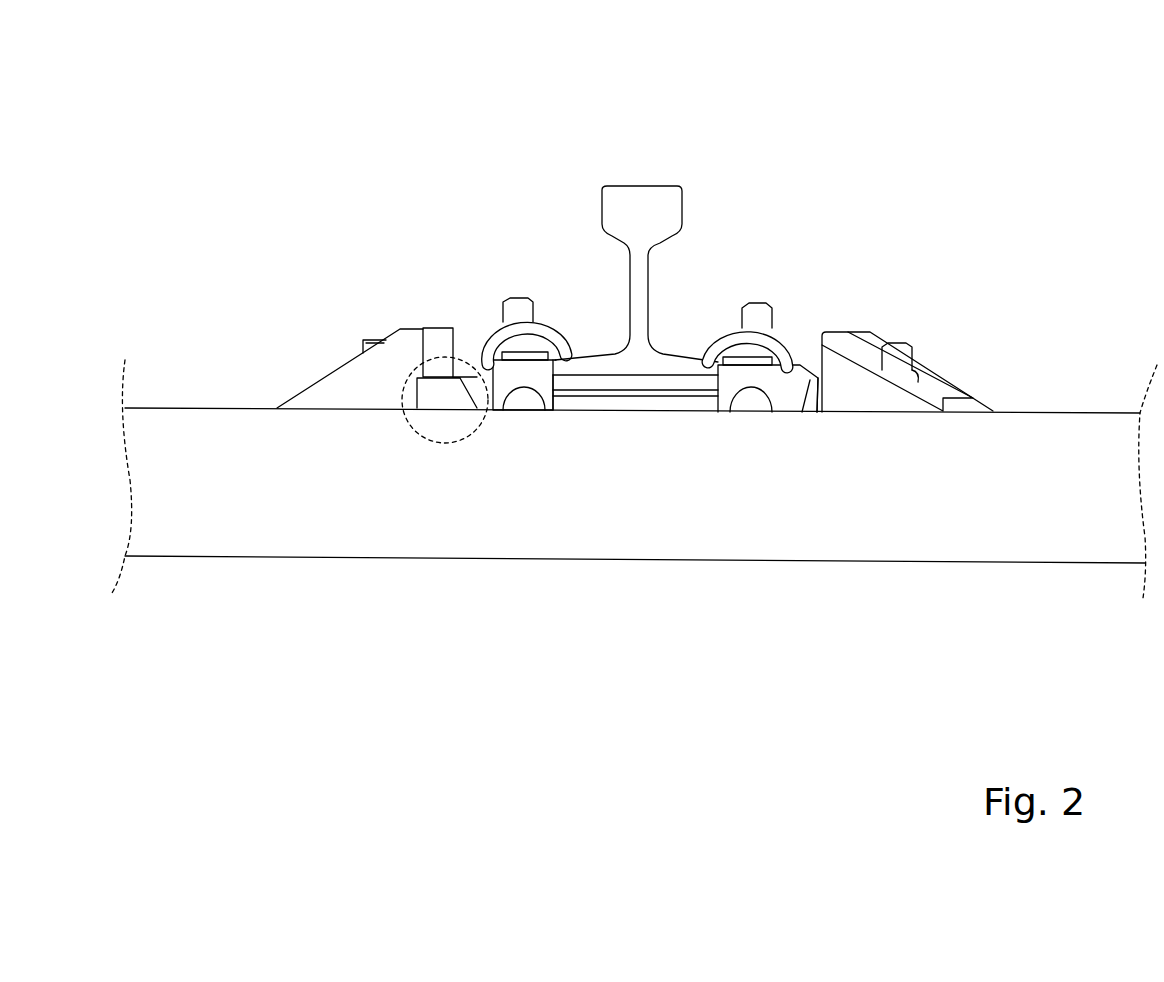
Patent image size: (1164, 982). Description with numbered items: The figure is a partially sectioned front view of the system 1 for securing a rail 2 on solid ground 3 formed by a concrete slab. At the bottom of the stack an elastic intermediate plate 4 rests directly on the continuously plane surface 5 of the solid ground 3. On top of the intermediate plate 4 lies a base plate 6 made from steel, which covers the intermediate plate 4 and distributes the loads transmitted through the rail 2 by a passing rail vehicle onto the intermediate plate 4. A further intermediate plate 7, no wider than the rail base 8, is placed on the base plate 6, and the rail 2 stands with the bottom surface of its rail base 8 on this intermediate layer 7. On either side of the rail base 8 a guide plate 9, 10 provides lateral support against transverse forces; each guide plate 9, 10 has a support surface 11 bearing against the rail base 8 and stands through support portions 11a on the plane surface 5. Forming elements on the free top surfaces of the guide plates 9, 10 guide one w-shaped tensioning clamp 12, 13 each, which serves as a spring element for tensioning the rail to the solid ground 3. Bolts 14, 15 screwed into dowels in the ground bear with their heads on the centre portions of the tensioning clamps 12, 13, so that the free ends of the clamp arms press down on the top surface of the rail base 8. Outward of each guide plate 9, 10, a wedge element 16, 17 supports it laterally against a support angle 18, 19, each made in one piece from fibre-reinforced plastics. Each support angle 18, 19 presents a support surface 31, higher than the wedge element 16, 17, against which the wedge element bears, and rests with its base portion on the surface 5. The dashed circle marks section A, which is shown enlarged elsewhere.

The system 1 is at (438, 160).
The rail 2 is at (643, 225).
The solid ground 3 is at (997, 492).
The elastic intermediate plate 4 is at (661, 405).
The plane surface 5 is at (1040, 413).
The base plate 6 is at (612, 393).
The further intermediate plate 7 is at (580, 387).
The rail base 8 is at (603, 362).
The guide plate 9 is at (511, 378).
The guide plate 10 is at (753, 380).
The support surface 11 is at (567, 383).
The support portions 11a is at (787, 400).
The w-shaped tensioning clamp 12 is at (493, 333).
The w-shaped tensioning clamp 13 is at (730, 333).
The bolt 14 is at (513, 312).
The bolt 15 is at (757, 315).
The wedge element 16 is at (442, 403).
The wedge element 17 is at (813, 402).
The support angle 18 is at (360, 383).
The support angle 19 is at (870, 390).
The support surface 31 is at (442, 340).
The section A is at (418, 366).